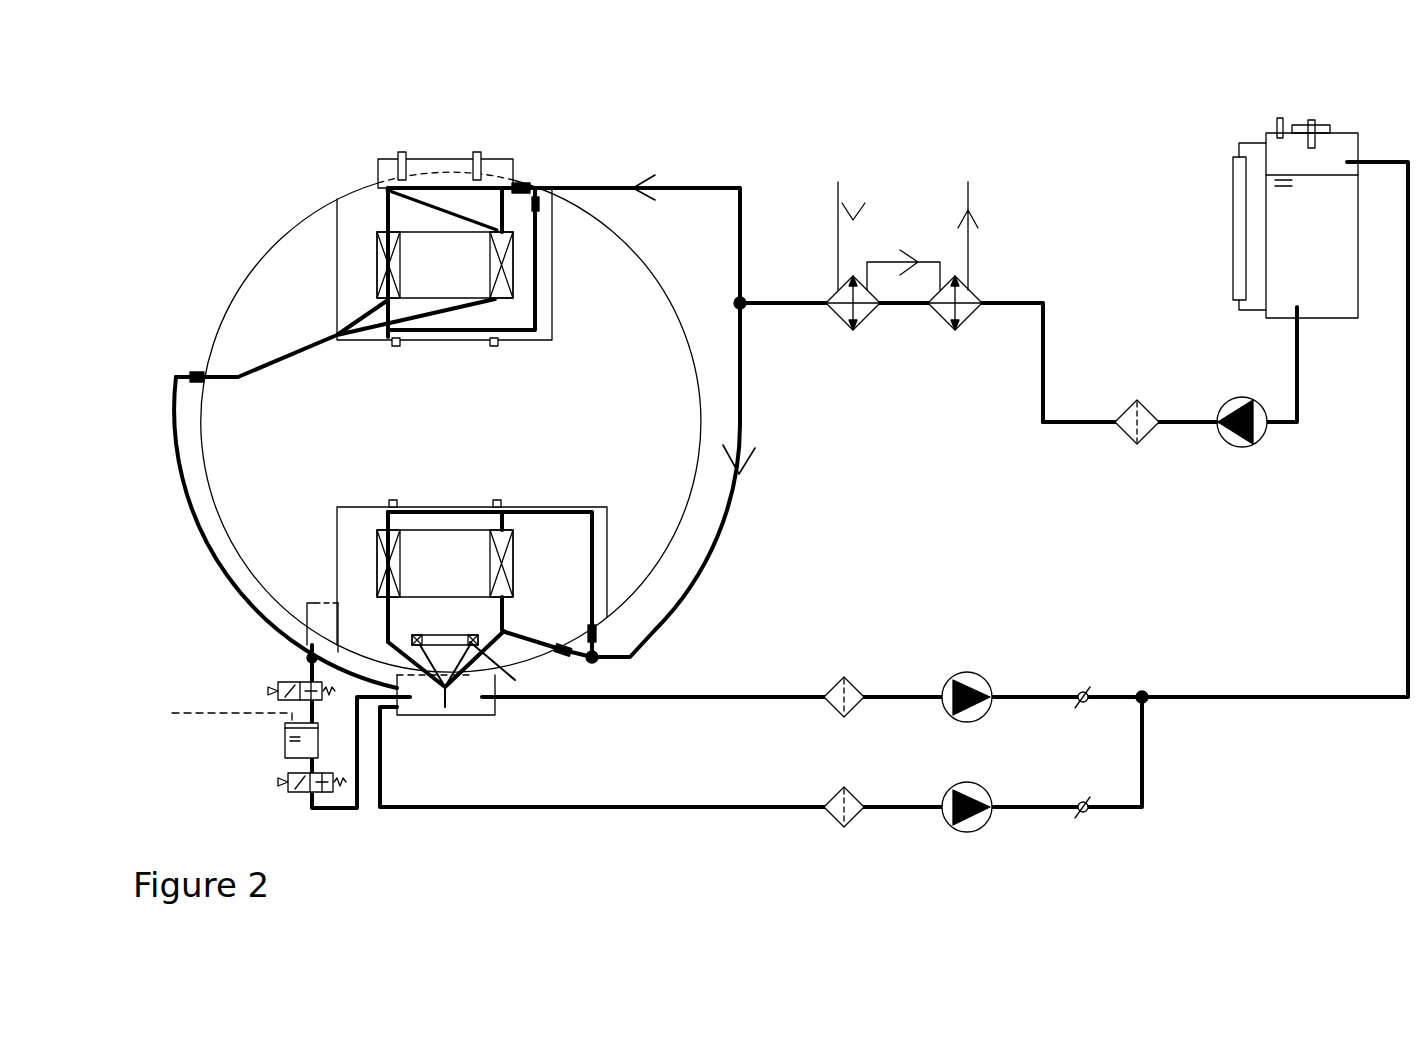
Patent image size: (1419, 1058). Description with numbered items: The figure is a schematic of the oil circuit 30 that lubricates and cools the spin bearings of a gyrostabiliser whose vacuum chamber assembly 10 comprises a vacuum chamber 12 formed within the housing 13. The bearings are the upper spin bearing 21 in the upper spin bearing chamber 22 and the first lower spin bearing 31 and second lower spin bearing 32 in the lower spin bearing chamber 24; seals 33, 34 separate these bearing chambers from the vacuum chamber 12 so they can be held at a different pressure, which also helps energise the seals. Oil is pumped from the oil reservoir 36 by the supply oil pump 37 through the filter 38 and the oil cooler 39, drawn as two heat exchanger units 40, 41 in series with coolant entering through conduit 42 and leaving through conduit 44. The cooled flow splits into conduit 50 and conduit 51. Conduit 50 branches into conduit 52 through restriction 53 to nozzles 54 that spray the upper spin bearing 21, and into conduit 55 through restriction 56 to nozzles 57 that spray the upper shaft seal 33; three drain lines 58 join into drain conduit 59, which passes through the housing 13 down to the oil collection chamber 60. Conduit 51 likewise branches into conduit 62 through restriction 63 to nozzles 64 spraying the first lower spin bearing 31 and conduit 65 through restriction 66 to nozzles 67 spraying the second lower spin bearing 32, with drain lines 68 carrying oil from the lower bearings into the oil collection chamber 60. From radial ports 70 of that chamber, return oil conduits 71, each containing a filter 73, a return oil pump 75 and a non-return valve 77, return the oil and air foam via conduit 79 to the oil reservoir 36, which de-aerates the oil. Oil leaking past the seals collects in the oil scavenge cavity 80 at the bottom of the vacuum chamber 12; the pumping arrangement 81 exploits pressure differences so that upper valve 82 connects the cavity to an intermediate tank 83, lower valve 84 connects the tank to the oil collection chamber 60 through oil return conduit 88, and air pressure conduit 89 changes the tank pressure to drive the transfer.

The vacuum chamber assembly 10 is at (275, 155).
The vacuum chamber 12 is at (273, 282).
The housing 13 is at (217, 320).
The upper spin bearing 21 is at (373, 247).
The upper spin bearing chamber 22 is at (348, 267).
The lower spin bearing chamber 24 is at (355, 515).
The oil circuit 30 is at (1290, 803).
The first lower spin bearing 31 is at (377, 567).
The second lower spin bearing 32 is at (385, 630).
The upper shaft seal 33 is at (503, 342).
The lower shaft seal 34 is at (497, 498).
The oil reservoir 36 is at (1282, 257).
The supply oil pump 37 is at (1222, 435).
The filter 38 is at (1122, 432).
The oil cooler 39 is at (1022, 263).
The heat exchanger unit 40 is at (935, 317).
The heat exchanger unit 41 is at (833, 317).
The coolant inlet conduit 42 is at (832, 192).
The coolant outlet conduit 44 is at (970, 192).
The conduit 50 is at (687, 187).
The conduit 51 is at (728, 513).
The conduit 52 is at (522, 183).
The restriction 53 is at (447, 187).
The nozzles 54 is at (385, 228).
The conduit 55 is at (540, 265).
The restriction 56 is at (545, 205).
The nozzles 57 is at (493, 338).
The drain lines 58 is at (343, 333).
The drain conduit 59 is at (178, 395).
The oil collection chamber 60 is at (467, 708).
The conduit 62 is at (600, 540).
The restriction 63 is at (600, 628).
The nozzles 64 is at (502, 528).
The conduit 65 is at (518, 633).
The restriction 66 is at (563, 646).
The nozzles 67 is at (485, 632).
The drain lines 68 is at (455, 683).
The radial ports 70 is at (393, 712).
The return oil conduits 71 is at (708, 697).
The filter 73 is at (840, 715).
The return oil pump 75 is at (957, 722).
The non-return valve 77 is at (1078, 708).
The conduit 79 is at (1408, 472).
The oil scavenge cavity 80 is at (307, 620).
The pumping arrangement 81 is at (195, 673).
The upper valve 82 is at (278, 688).
The intermediate tank 83 is at (285, 755).
The lower valve 84 is at (295, 792).
The oil return conduit 88 is at (335, 808).
The air pressure conduit 89 is at (228, 713).